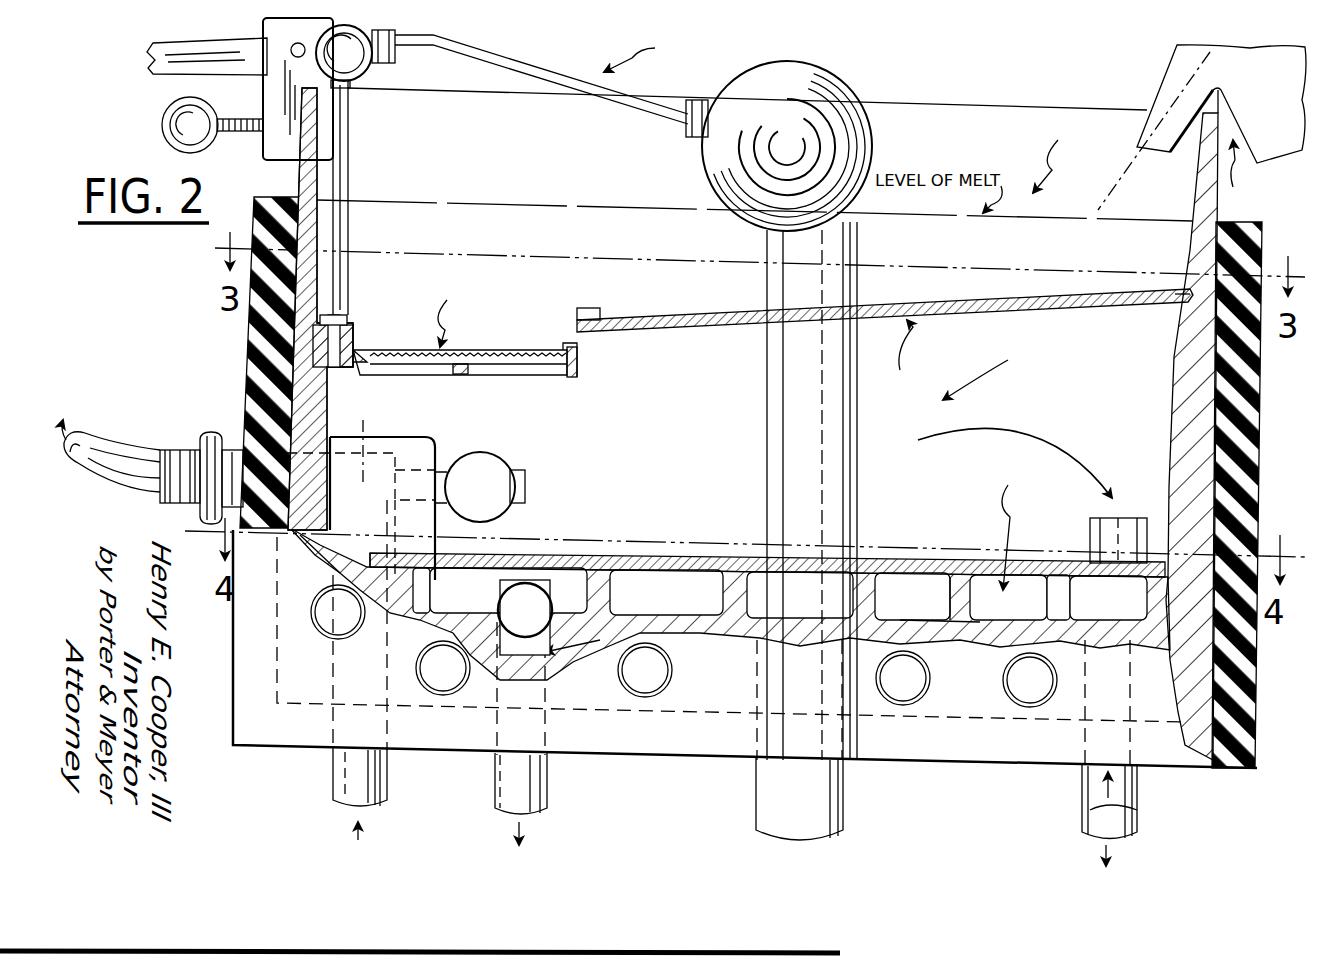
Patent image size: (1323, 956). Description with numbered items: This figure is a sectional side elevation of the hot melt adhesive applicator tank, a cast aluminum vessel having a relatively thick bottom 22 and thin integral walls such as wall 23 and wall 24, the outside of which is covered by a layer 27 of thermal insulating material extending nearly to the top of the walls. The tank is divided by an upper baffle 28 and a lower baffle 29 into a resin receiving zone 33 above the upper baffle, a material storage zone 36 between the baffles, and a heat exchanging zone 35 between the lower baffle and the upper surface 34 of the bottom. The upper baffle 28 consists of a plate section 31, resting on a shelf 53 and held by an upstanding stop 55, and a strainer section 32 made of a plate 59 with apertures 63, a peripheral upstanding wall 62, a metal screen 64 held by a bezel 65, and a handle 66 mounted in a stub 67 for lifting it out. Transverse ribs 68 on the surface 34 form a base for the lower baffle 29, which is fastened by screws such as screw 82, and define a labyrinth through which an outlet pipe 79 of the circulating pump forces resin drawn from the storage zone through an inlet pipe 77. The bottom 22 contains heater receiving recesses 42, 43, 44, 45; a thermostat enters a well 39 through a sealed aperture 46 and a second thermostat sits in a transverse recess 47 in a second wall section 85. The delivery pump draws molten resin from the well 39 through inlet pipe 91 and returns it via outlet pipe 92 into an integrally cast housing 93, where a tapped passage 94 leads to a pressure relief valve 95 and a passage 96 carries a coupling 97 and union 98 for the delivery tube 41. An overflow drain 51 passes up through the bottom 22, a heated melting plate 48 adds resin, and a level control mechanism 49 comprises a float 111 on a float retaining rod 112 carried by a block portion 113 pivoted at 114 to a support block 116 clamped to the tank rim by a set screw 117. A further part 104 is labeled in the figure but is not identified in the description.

The bottom section 22 is at (978, 633).
The wall 23 is at (1188, 364).
The wall 24 is at (307, 295).
The layer of thermal insulating material 27 is at (1245, 445).
The upper baffle 28 is at (895, 354).
The lower baffle 29 is at (930, 570).
The plate section 31 is at (873, 315).
The strainer section 32 is at (450, 315).
The resin receiving zone 33 is at (1056, 157).
The upper surface of bottom 34 is at (935, 625).
The heat exchanging zone 35 is at (1009, 528).
The material storage zone 36 is at (986, 370).
The well 39 is at (488, 613).
The delivery tube 41 is at (118, 457).
The heater receiving recess 42 is at (1037, 685).
The heater receiving recess 43 is at (913, 683).
The heater receiving recess 44 is at (656, 672).
The heater receiving recess 45 is at (437, 677).
The sealed aperture 46 is at (540, 600).
The transverse recess 47 is at (328, 622).
The heated melting plate 48 is at (1238, 176).
The level control means 49 is at (641, 54).
The overflow drain 51 is at (775, 783).
The shelf 53 is at (1172, 300).
The upstanding stop 55 is at (587, 310).
The plate 59 is at (460, 375).
The upstanding wall 62 is at (577, 357).
The apertures 63 is at (390, 375).
The metal screen 64 is at (483, 358).
The bezel 65 is at (563, 350).
The upstanding handle 66 is at (348, 170).
The stub 67 is at (343, 367).
The transverse ribs 68 is at (597, 576).
The inlet pipe 77 is at (1120, 523).
The outlet pipe 79 is at (1095, 783).
The screw 82 is at (387, 583).
The second wall section 85 is at (323, 553).
The inlet pipe 91 is at (517, 780).
The outlet pipe 92 is at (352, 771).
The integrally cast housing 93 is at (410, 445).
The tapped passage 94 is at (417, 483).
The pressure relief valve 95 is at (497, 472).
The passage 96 is at (361, 494).
The coupling 97 is at (228, 450).
The union 98 is at (211, 432).
The pouring spout 104 is at (1137, 92).
The float 111 is at (827, 87).
The float retaining rod 112 is at (527, 67).
The block portion 113 is at (196, 45).
The pivot 114 is at (291, 52).
The support block 116 is at (273, 100).
The set screw 117 is at (237, 134).